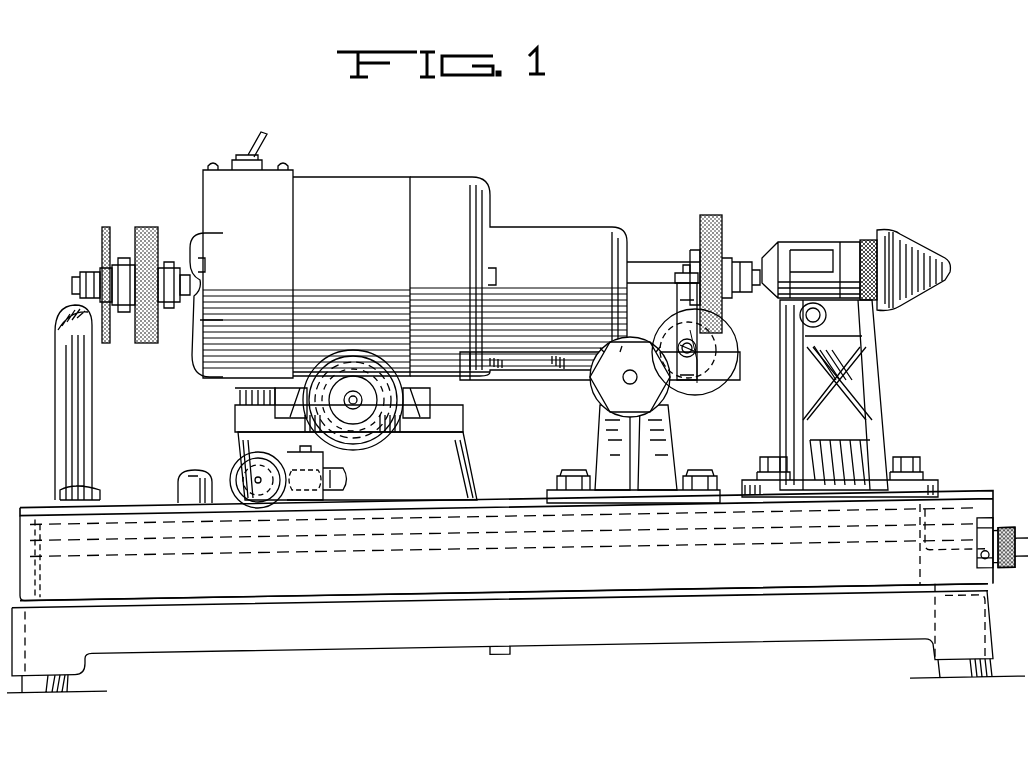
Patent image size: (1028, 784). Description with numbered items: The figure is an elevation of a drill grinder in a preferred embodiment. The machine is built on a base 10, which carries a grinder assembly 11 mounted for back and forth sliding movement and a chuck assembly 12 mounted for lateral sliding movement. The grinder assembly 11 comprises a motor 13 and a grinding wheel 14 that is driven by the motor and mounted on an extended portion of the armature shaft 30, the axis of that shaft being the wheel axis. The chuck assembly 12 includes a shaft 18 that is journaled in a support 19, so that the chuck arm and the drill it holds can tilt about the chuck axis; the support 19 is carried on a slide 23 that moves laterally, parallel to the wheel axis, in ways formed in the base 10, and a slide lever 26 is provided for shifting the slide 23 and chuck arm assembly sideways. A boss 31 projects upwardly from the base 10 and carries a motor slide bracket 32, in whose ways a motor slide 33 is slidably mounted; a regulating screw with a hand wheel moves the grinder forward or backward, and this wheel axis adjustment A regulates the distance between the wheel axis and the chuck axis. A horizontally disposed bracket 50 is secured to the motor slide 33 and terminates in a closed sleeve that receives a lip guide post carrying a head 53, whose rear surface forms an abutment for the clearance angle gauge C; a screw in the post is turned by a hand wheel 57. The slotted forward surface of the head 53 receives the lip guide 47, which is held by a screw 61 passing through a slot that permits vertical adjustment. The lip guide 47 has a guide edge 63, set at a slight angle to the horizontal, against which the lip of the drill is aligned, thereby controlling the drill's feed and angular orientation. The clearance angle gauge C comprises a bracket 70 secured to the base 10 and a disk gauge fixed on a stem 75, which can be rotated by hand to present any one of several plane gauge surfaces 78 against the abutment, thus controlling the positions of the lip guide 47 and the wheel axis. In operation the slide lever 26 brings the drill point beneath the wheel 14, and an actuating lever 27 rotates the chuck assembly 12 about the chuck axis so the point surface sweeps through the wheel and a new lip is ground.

The base 10 is at (331, 650).
The grinder assembly 11 is at (497, 203).
The chuck assembly 12 is at (880, 386).
The motor 13 is at (353, 283).
The grinding wheel 14 is at (712, 218).
The shaft 18 is at (851, 226).
The support 19 is at (880, 356).
The slide 23 is at (983, 487).
The slide lever 26 is at (298, 497).
The actuating lever 27 is at (940, 267).
The armature shaft 30 is at (642, 268).
The boss 31 is at (457, 468).
The motor slide bracket 32 is at (463, 415).
The motor slide 33 is at (430, 404).
The lip guide 47 is at (697, 378).
The bracket 50 is at (530, 364).
The head 53 is at (668, 338).
The hand wheel 57 is at (735, 348).
The screw 61 is at (692, 353).
The guide edge 63 is at (690, 288).
The bracket 70 is at (600, 448).
The stem 75 is at (625, 381).
The gauge surfaces 78 is at (600, 365).
The wheel axis adjustment A is at (348, 352).
The clearance angle gauge C is at (668, 407).